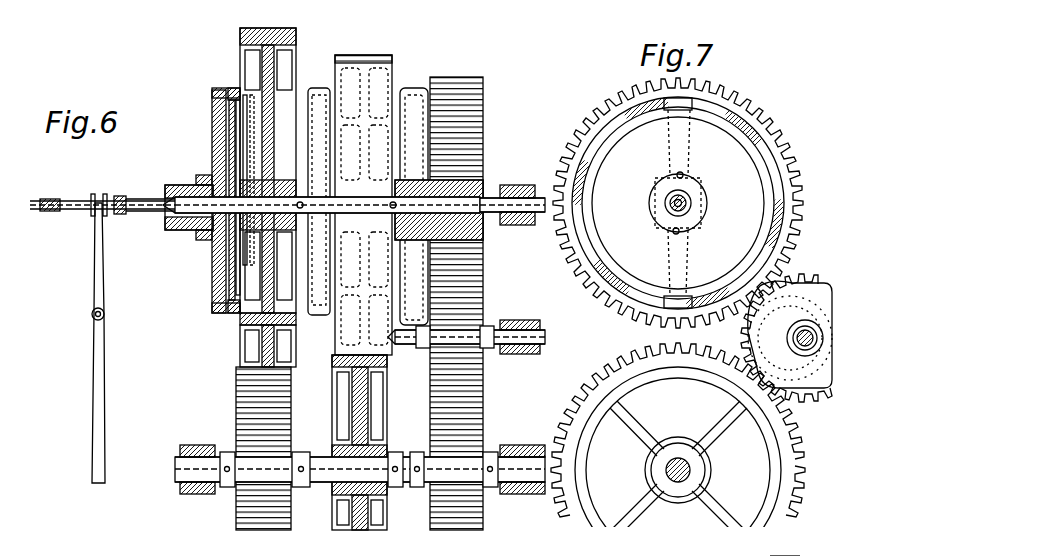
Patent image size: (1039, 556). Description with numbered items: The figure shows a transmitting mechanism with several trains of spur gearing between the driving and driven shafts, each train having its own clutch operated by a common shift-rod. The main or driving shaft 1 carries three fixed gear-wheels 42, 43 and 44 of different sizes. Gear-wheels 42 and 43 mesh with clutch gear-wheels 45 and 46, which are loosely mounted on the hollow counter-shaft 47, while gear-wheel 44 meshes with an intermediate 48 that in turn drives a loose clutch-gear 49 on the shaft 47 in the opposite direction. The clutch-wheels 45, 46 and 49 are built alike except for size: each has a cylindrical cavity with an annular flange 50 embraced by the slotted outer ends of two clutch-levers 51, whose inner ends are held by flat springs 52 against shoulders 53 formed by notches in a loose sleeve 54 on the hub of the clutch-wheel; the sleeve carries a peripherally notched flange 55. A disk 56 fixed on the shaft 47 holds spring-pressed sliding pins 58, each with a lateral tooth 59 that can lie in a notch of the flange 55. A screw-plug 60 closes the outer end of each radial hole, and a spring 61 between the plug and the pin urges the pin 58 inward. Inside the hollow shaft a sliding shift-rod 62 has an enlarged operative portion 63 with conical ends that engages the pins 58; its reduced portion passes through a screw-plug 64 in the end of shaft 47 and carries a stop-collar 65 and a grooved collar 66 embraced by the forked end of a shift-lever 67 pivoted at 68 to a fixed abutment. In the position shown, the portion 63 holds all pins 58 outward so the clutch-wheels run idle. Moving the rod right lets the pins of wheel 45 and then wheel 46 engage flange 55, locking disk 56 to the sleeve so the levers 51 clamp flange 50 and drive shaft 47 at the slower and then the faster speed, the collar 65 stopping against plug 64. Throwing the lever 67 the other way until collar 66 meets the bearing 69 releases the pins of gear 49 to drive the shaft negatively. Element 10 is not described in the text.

In FIG. 6, the main or driving shaft 1 is at (175, 466).
In FIG. 6, the fixed gear-wheel 42 is at (240, 407).
In FIG. 6, the fixed gear-wheel 43 is at (333, 407).
In FIG. 6, the fixed gear-wheel 44 is at (430, 425).
In FIG. 6, the clutch gear-wheel 45 is at (240, 28).
In FIG. 6, the clutch gear-wheel 46 is at (337, 56).
In FIG. 6, the hollow counter-shaft 47 is at (500, 198).
In FIG. 6, the intermediate 48 is at (482, 300).
In FIG. 6, the clutch-gear 49 is at (442, 77).
In FIG. 6, the annular flange 50 is at (283, 105).
In FIG. 7, the annular flange 50 is at (761, 415).
In FIG. 6, the clutch-lever 51 is at (253, 90).
In FIG. 7, the clutch-lever 51 is at (682, 185).
In FIG. 7, the flat spring 52 is at (695, 252).
In FIG. 7, the shoulder 53 is at (686, 162).
In FIG. 7, the loose sleeve 54 is at (708, 205).
In FIG. 7, the peripherally notched flange 55 is at (678, 203).
In FIG. 6, the disk 56 is at (214, 145).
In FIG. 6, the sliding pin 58 is at (229, 240).
In FIG. 7, the lateral tooth 59 is at (600, 555).
In FIG. 6, the screw-plug 60 is at (228, 90).
In FIG. 6, the spring 61 is at (214, 118).
In FIG. 6, the shift-rod 62 is at (145, 212).
In FIG. 6, the enlarged operative portion 63 is at (268, 203).
In FIG. 6, the screw-plug 64 is at (168, 192).
In FIG. 6, the stop-collar 65 is at (122, 196).
In FIG. 6, the grooved collar 66 is at (102, 190).
In FIG. 6, the shift-lever 67 is at (105, 258).
In FIG. 6, the pivot 68 is at (106, 320).
In FIG. 6, the bearing 69 is at (58, 212).
In FIG. 7, the frame 10 is at (796, 546).